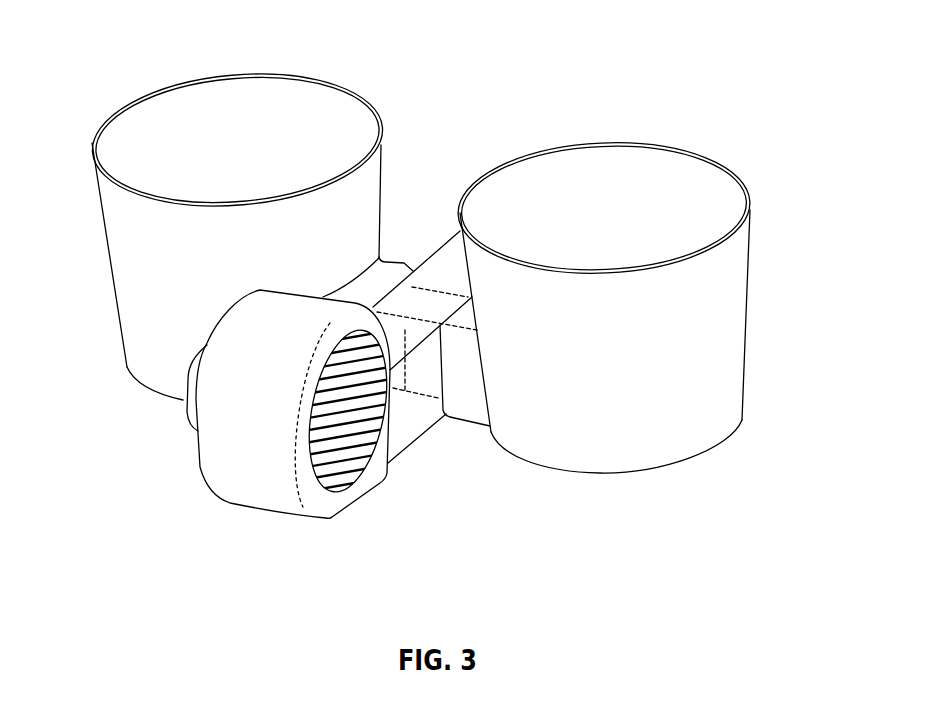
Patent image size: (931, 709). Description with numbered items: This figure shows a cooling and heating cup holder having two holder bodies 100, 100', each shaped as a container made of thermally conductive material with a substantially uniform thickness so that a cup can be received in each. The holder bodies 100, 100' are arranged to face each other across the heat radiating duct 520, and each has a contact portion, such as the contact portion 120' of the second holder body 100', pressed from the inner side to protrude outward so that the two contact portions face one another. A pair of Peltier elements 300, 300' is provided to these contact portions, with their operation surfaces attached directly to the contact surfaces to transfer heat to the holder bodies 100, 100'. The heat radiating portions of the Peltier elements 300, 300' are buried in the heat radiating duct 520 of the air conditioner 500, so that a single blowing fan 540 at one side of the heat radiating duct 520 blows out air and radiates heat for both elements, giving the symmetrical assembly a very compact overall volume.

The holder body 100 is at (210, 231).
The holder body 100' is at (648, 305).
The contact portion 120' is at (503, 481).
The Peltier element 300 is at (395, 204).
The Peltier element 300' is at (431, 225).
The air conditioner 500 is at (383, 510).
The heat radiating duct 520 is at (413, 417).
The blowing fan 540 is at (175, 443).